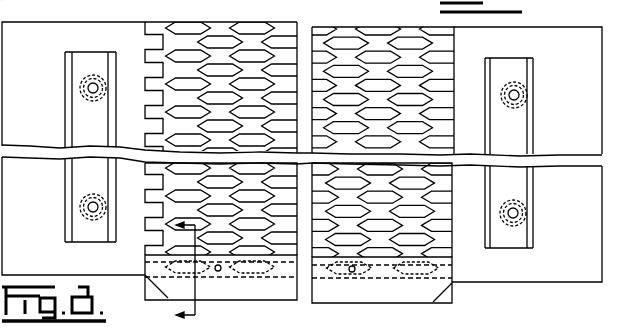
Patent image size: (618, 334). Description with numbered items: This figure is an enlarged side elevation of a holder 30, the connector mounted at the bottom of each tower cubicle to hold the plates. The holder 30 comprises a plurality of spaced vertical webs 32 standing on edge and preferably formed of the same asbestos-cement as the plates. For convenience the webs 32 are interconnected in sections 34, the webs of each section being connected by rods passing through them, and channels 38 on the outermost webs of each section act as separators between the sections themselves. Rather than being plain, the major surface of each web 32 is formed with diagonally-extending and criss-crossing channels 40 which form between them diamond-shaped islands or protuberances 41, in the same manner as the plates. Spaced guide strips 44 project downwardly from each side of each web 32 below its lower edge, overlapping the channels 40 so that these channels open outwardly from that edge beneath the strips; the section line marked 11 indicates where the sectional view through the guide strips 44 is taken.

The holder 30 is at (49, 23).
The vertical web 32 is at (124, 26).
The section 34 is at (192, 22).
The channel 38 is at (73, 68).
The channel 40 is at (413, 32).
The protuberance 41 is at (270, 25).
The guide strip 44 is at (345, 292).
The section line 11- 11 is at (175, 271).